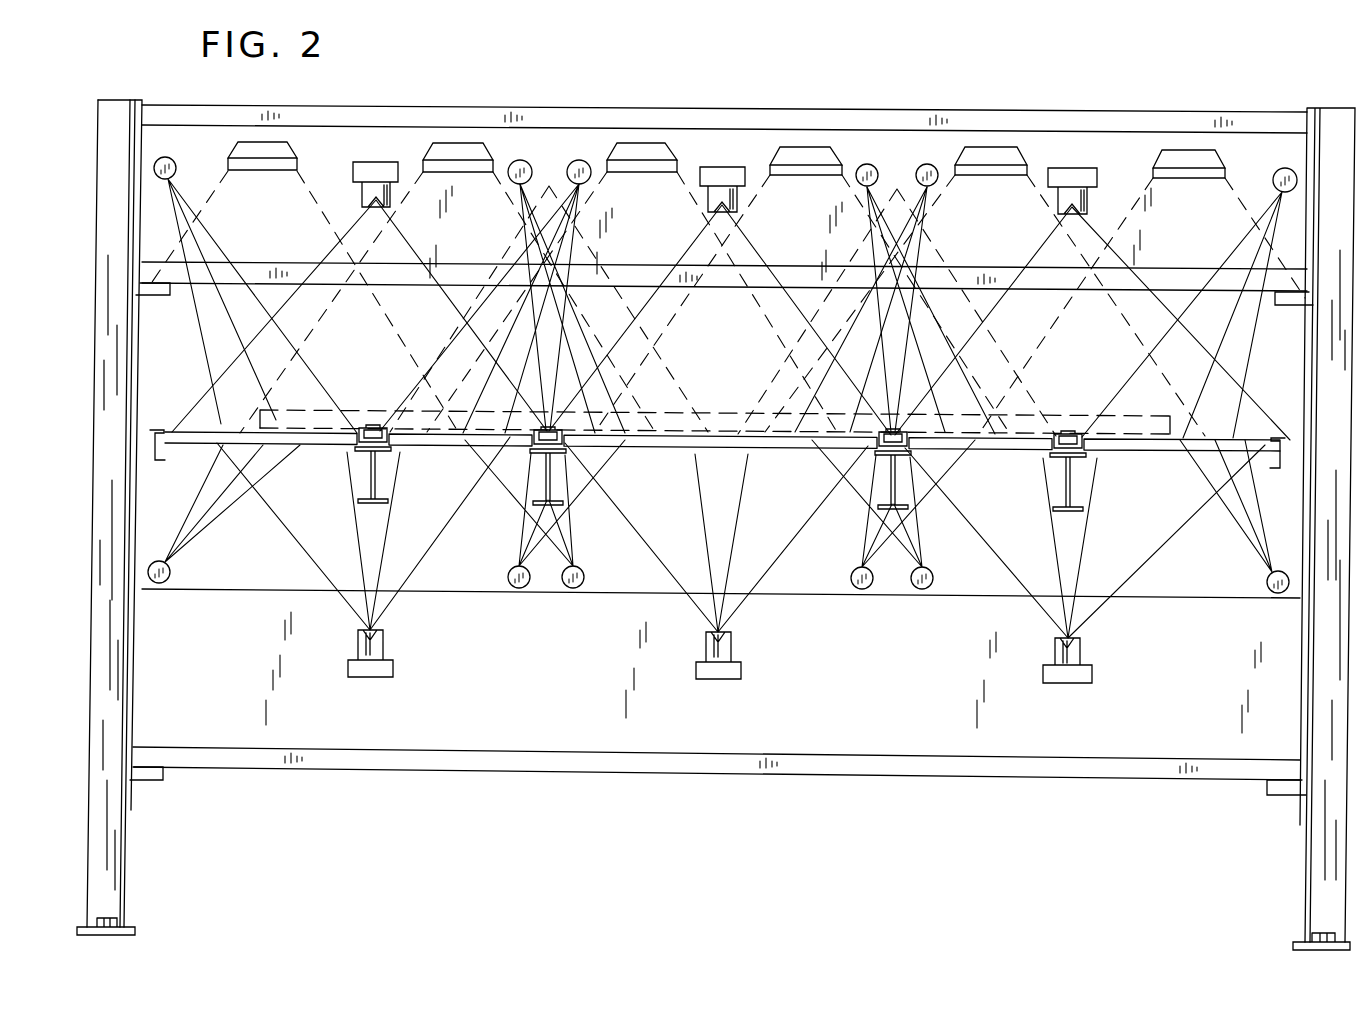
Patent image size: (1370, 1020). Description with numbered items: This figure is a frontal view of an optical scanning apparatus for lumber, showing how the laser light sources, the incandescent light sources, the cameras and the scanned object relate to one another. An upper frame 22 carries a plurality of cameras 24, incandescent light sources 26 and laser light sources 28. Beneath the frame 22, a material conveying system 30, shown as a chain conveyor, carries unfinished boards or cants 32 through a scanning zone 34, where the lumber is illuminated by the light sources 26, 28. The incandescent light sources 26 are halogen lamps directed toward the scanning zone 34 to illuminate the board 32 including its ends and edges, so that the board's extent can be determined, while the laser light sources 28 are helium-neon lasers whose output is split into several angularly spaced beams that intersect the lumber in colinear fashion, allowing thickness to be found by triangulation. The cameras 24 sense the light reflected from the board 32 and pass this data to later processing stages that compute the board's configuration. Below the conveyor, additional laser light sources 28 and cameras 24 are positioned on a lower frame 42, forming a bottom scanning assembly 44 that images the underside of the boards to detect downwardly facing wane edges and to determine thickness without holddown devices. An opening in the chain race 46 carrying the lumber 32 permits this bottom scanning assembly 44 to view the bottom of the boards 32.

The frame 22 is at (350, 112).
The camera 24 is at (378, 170).
The incandescent light source 26 is at (262, 170).
The laser light source 28 is at (170, 157).
The material conveying system 30 is at (360, 446).
The board 32 is at (364, 410).
The scanning zone 34 is at (1212, 362).
The lower frame 42 is at (450, 752).
The bottom scanning assembly 44 is at (248, 657).
The chain race 46 is at (395, 446).